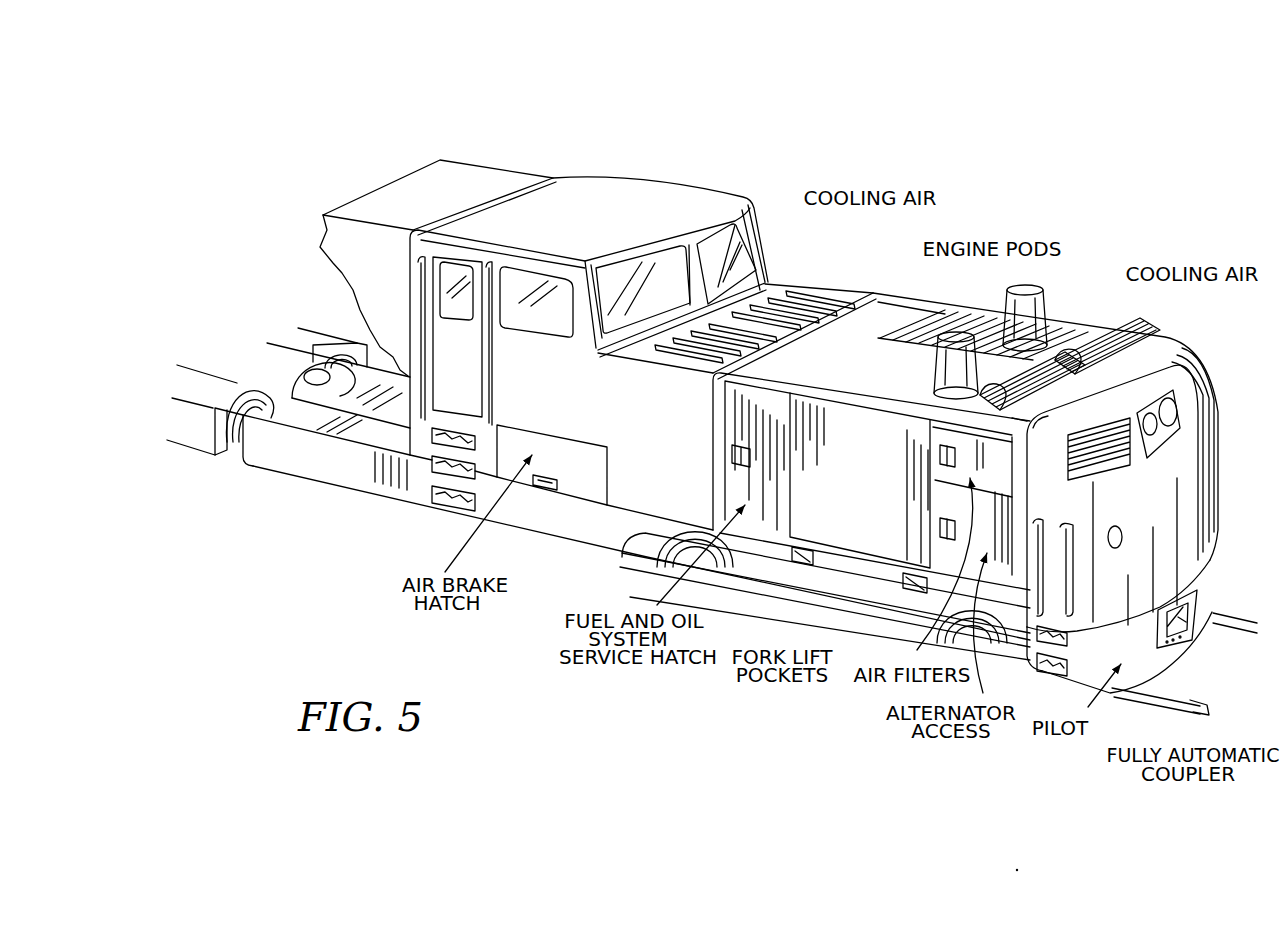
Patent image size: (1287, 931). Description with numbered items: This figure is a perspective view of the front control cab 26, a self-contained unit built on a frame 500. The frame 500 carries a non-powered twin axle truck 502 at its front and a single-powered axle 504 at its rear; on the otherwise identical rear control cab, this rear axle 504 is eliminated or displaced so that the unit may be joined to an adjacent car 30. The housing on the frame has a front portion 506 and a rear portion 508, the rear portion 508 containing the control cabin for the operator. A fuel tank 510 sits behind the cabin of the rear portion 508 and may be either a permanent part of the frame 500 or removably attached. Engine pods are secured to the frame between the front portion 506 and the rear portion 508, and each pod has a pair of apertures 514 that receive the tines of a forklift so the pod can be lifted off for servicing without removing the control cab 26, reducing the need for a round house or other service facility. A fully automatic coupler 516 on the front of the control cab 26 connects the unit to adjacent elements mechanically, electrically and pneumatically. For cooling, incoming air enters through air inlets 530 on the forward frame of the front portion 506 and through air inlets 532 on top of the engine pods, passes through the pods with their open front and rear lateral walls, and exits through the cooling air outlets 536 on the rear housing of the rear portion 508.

The control cab 26 is at (1053, 198).
The adjacent car 30 is at (285, 356).
The frame 500 is at (588, 543).
The non-powered twin axle truck 502 is at (770, 570).
The single-powered axle 504 is at (236, 440).
The front portion 506 is at (1187, 517).
The rear portion 508 is at (761, 279).
The fuel tank 510 is at (503, 173).
The apertures 514 is at (913, 587).
The fully automatic coupler 516 is at (1227, 737).
The air inlets 530 is at (1214, 383).
The air inlets 532 is at (1131, 329).
The cooling air outlets 536 is at (825, 285).